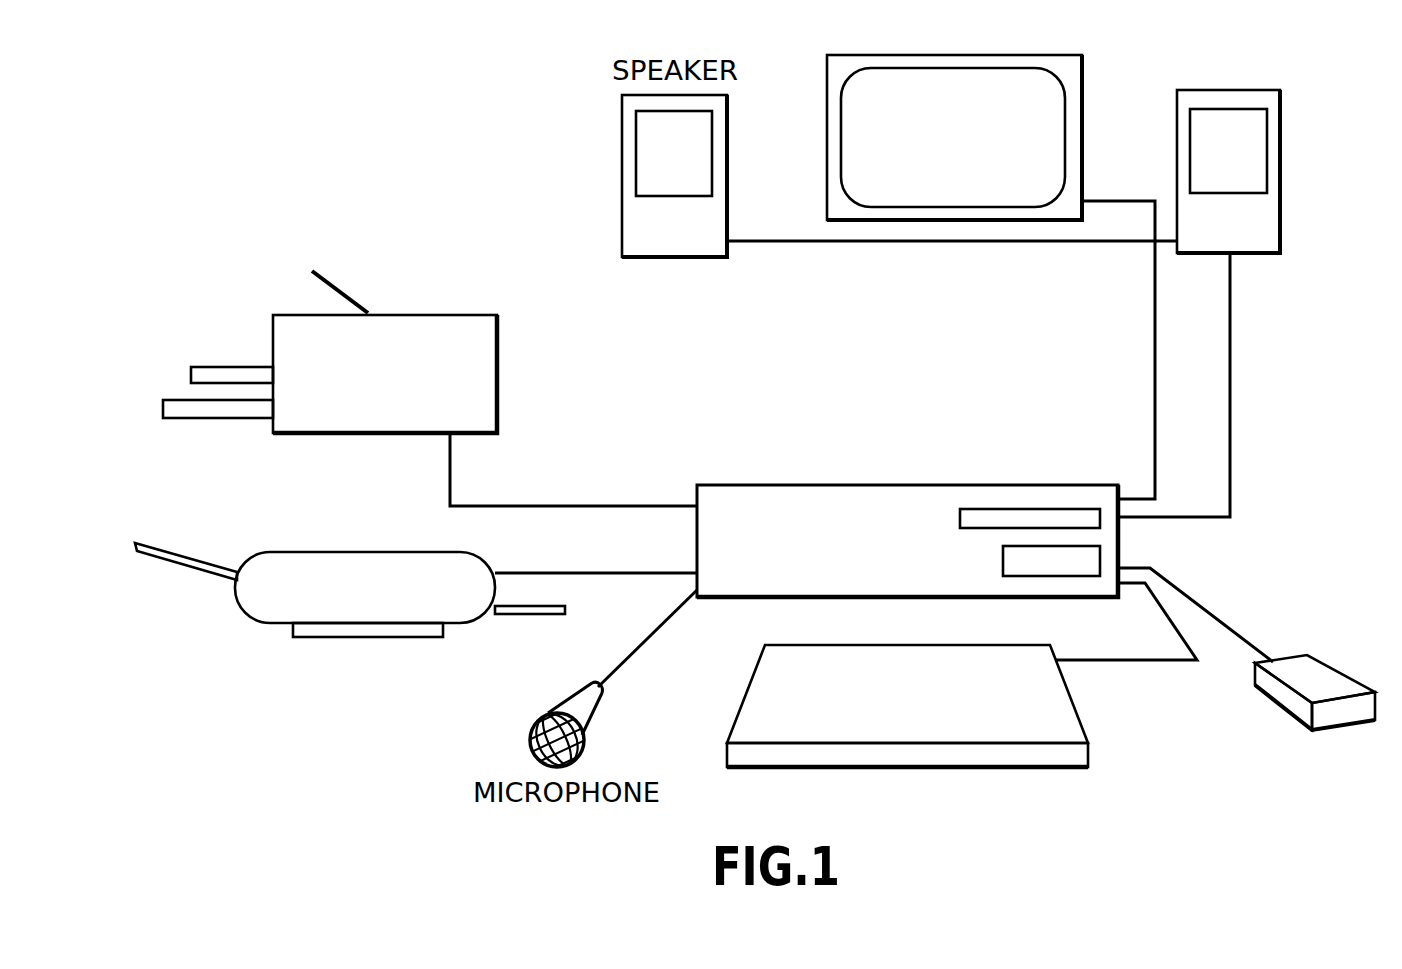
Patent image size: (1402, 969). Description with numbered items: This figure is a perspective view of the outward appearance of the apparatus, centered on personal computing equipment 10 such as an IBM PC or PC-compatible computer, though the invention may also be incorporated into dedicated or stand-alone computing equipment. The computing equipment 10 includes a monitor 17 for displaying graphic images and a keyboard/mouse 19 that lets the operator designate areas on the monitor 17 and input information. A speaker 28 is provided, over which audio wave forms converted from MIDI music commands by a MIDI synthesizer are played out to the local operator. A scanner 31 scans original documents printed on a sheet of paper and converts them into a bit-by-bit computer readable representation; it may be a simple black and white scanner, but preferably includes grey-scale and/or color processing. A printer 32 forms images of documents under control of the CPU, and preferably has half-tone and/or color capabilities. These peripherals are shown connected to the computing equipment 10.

The personal computing equipment 10 is at (797, 485).
The monitor 17 is at (955, 55).
The keyboard/mouse 19 is at (1282, 712).
The speaker 28 is at (1215, 90).
The scanner 31 is at (333, 551).
The printer 32 is at (395, 315).